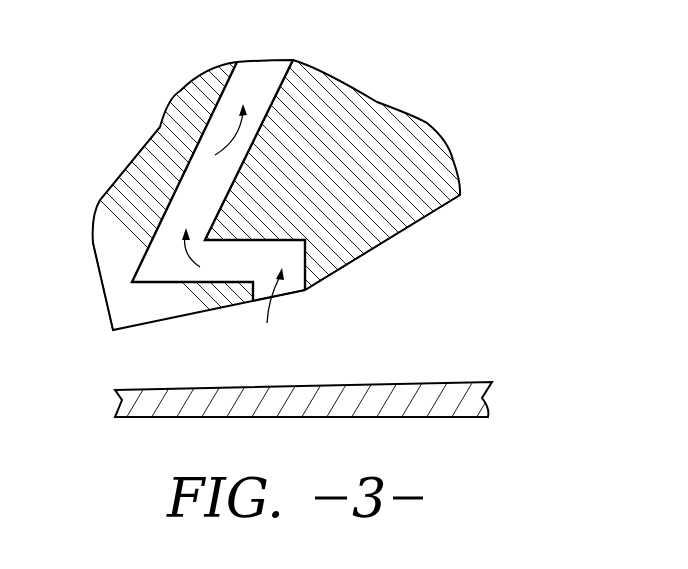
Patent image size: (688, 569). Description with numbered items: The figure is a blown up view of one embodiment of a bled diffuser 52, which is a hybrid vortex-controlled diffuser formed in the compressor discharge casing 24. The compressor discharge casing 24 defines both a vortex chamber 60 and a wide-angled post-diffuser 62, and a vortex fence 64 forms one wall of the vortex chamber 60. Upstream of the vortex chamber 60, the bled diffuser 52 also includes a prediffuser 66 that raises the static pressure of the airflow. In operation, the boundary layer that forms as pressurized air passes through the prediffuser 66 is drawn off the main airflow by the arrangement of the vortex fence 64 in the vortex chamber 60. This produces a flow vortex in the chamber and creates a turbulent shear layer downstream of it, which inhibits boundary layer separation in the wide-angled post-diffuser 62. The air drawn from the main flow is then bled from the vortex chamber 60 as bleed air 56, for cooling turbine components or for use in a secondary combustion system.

The compressor discharge casing 24 is at (357, 180).
The bled diffuser 52 is at (434, 335).
The bleed air 56 is at (233, 140).
The vortex chamber 60 is at (232, 262).
The wide-angled post-diffuser 62 is at (413, 227).
The vortex fence 64 is at (304, 265).
The prediffuser 66 is at (158, 323).